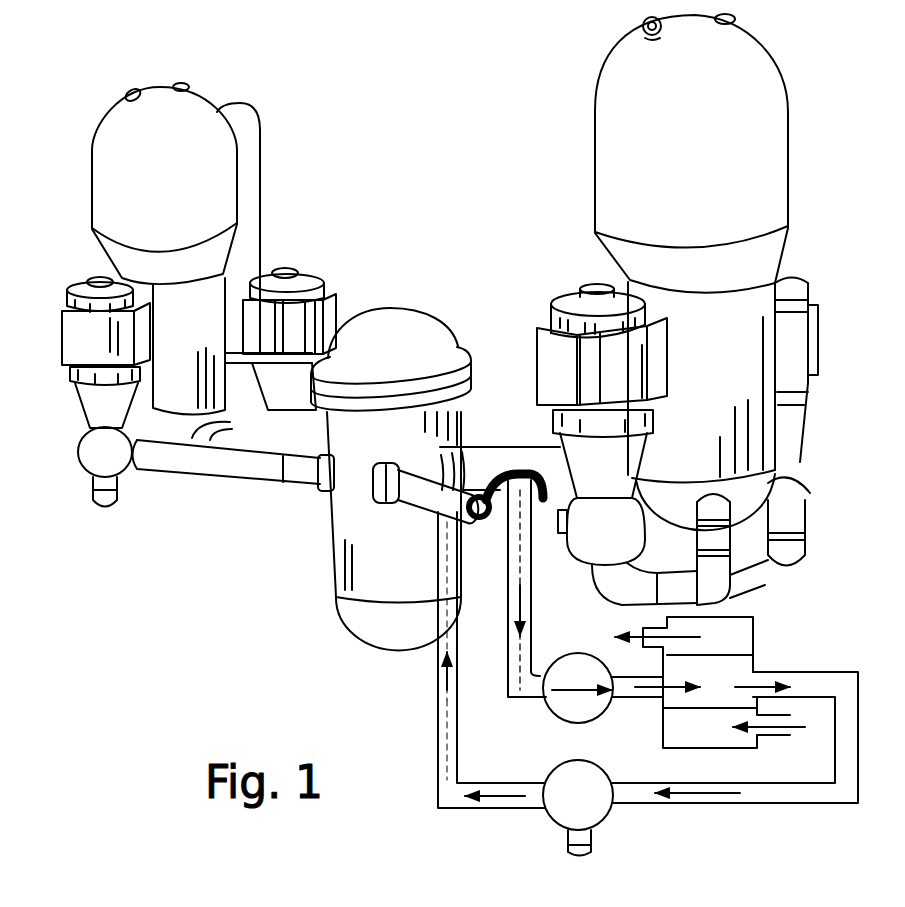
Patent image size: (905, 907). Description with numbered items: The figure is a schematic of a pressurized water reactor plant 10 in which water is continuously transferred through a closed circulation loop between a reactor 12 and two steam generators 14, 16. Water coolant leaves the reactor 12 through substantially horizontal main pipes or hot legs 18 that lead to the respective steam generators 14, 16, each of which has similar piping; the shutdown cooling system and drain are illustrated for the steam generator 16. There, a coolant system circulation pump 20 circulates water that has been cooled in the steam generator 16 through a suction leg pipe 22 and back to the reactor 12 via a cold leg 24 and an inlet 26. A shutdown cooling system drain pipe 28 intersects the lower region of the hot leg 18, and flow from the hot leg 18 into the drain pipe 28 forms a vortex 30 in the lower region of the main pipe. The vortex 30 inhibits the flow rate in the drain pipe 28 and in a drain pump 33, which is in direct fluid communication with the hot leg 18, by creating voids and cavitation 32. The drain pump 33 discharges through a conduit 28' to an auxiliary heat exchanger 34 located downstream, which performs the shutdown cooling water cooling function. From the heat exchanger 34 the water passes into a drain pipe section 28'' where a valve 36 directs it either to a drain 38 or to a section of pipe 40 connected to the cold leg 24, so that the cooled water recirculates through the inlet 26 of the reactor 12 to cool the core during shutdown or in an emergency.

The pressurized water reactor plant 10 is at (110, 78).
The reactor 12 is at (413, 317).
The steam generator 14 is at (103, 130).
The steam generator 16 is at (783, 118).
The hot leg 18 is at (250, 445).
The coolant system circulation pump 20 is at (628, 478).
The suction leg pipe 22 is at (700, 604).
The cold leg 24 is at (420, 513).
The inlet 26 is at (383, 480).
The shutdown cooling system drain pipe 28 is at (393, 606).
The conduit 28' is at (655, 719).
The drain pipe section 28'' is at (735, 768).
The vortex 30 is at (496, 523).
The voids and cavitation 32 is at (533, 565).
The drain pump 33 is at (556, 716).
The auxiliary heat exchanger 34 is at (758, 633).
The valve 36 is at (612, 818).
The drain 38 is at (566, 848).
The section of pipe 40 is at (437, 745).